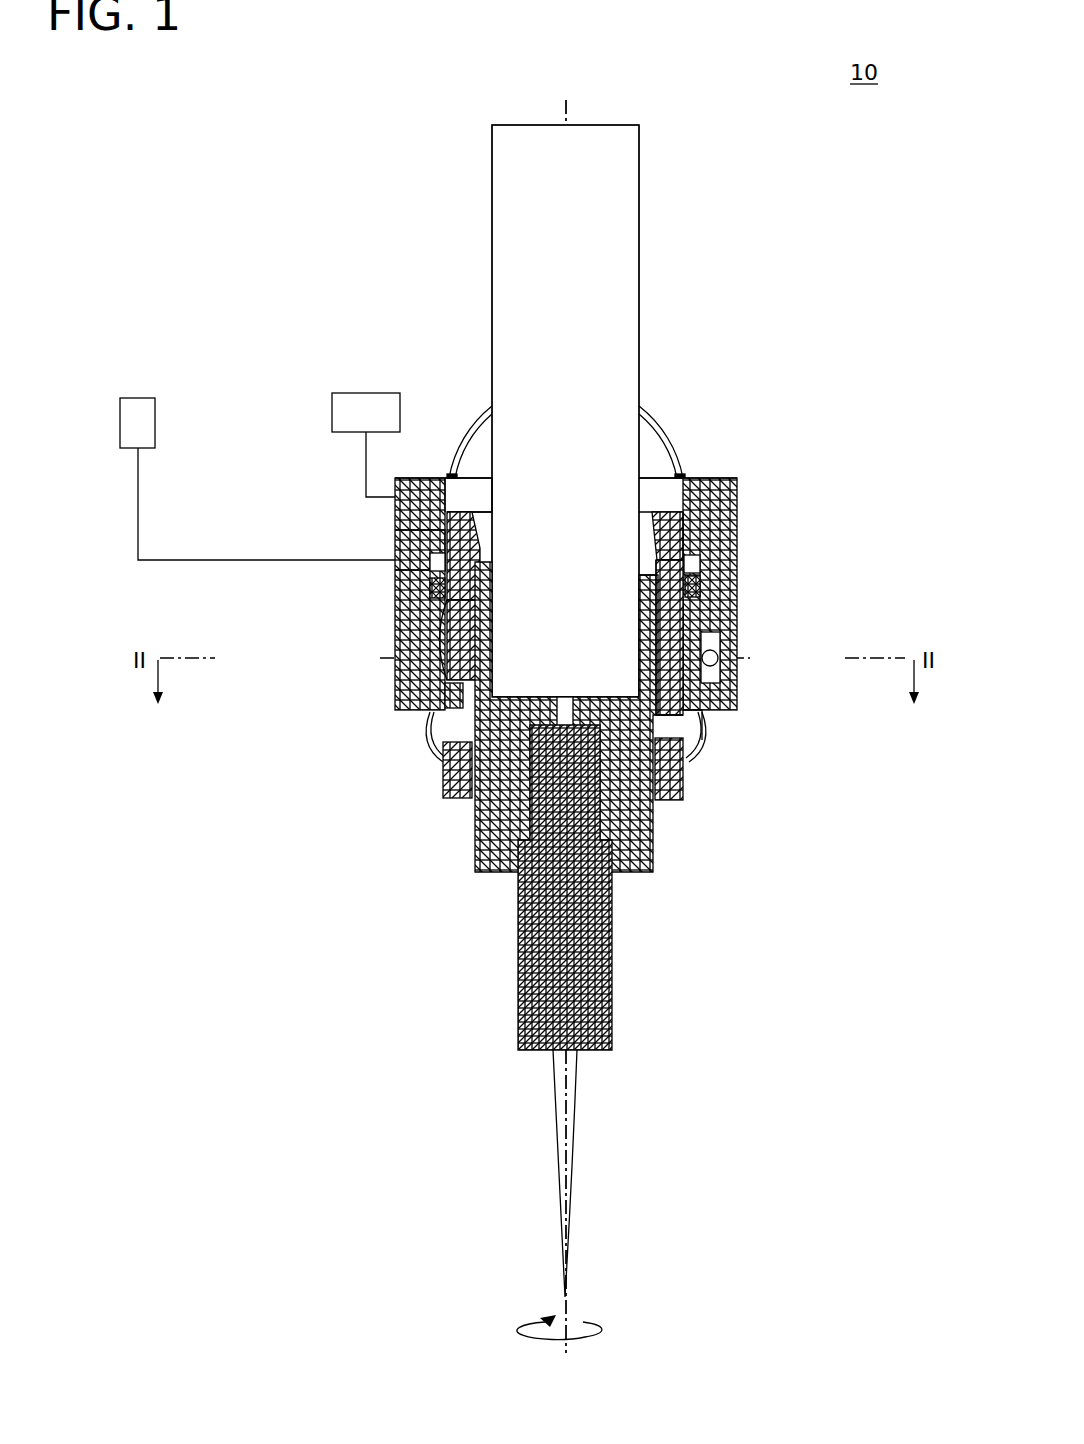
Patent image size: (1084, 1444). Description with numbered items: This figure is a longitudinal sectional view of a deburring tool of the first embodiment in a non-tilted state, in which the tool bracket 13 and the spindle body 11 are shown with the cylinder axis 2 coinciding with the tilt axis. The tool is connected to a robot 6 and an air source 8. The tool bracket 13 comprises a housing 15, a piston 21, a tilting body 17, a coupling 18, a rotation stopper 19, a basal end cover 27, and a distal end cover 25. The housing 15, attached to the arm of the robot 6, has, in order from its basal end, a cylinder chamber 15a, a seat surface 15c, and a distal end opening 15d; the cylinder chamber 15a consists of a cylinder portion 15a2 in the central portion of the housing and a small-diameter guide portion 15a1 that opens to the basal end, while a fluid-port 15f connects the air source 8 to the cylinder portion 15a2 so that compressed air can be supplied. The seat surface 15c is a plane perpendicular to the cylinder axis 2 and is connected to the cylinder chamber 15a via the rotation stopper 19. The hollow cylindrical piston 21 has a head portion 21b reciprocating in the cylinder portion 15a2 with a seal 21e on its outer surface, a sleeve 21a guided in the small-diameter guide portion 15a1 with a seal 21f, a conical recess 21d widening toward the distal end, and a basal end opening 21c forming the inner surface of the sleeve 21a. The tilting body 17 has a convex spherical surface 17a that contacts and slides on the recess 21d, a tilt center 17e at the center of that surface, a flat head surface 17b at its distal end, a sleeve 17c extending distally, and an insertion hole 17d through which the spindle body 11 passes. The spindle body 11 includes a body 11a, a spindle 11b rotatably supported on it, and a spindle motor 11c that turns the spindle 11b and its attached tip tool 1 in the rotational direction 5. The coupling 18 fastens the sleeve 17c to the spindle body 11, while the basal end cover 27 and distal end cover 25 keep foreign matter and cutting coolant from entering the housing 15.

The tip tool 1 is at (573, 1183).
The cylinder axis 2 is at (570, 109).
The rotational direction 5 is at (585, 1333).
The robot 6 is at (340, 393).
The air source 8 is at (135, 398).
The spindle body 11 is at (827, 855).
The body 11a is at (653, 852).
The spindle 11b is at (612, 918).
The spindle motor 11c is at (640, 262).
The tool bracket 13 is at (722, 428).
The housing 15 is at (233, 512).
The cylinder chamber 15a is at (289, 493).
The small-diameter guide portion 15a1 is at (395, 507).
The cylinder portion 15a2 is at (395, 552).
The seat surface 15c is at (395, 640).
The distal end opening 15d is at (395, 688).
The fluid-port 15f is at (395, 565).
The tilting body 17 is at (827, 645).
The convex spherical surface 17a is at (737, 643).
The head surface 17b is at (720, 692).
The sleeve 17c is at (690, 727).
The insertion hole 17d is at (680, 737).
The tilt center 17e is at (563, 655).
The coupling 18 is at (683, 790).
The rotation stopper 19 is at (737, 622).
The piston 21 is at (827, 413).
The sleeve 21a is at (700, 510).
The head portion 21b is at (703, 610).
The basal end opening 21c is at (688, 478).
The recess 21d is at (705, 562).
The seal 21e is at (703, 586).
The seal 21f is at (705, 540).
The distal end cover 25 is at (428, 733).
The basal end cover 27 is at (665, 440).